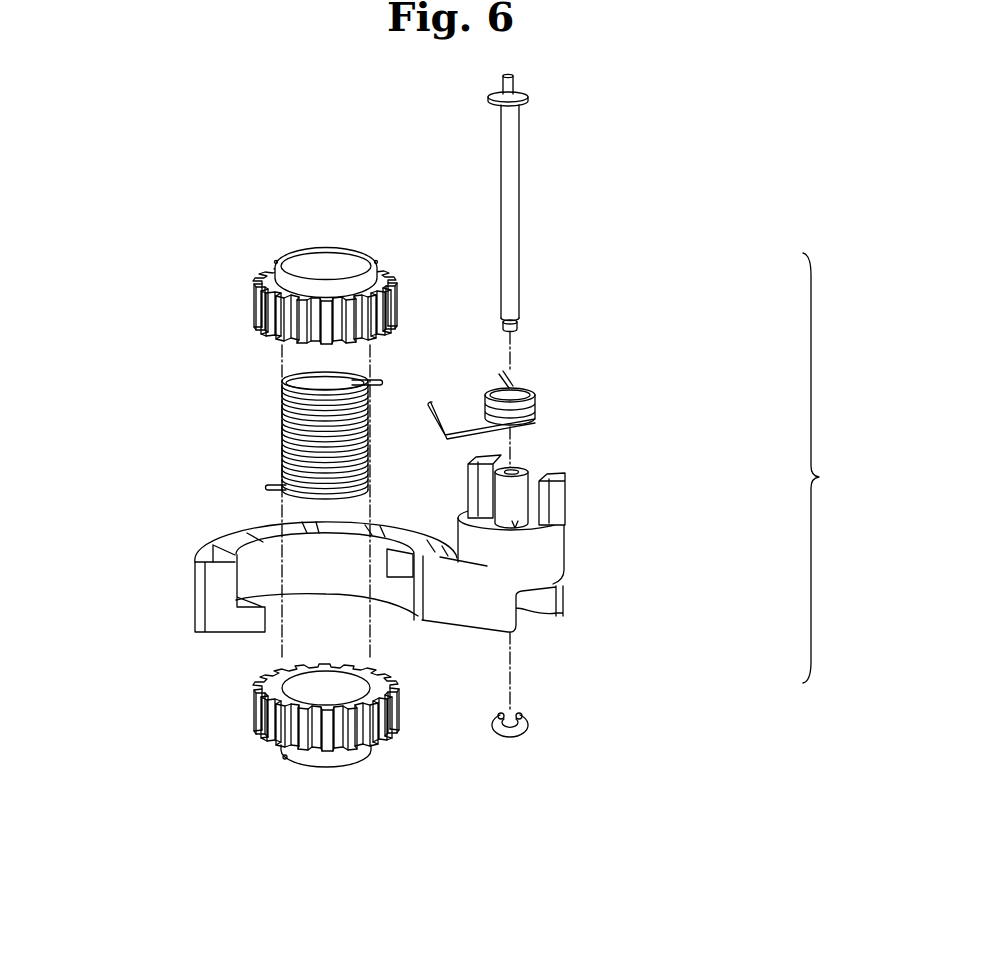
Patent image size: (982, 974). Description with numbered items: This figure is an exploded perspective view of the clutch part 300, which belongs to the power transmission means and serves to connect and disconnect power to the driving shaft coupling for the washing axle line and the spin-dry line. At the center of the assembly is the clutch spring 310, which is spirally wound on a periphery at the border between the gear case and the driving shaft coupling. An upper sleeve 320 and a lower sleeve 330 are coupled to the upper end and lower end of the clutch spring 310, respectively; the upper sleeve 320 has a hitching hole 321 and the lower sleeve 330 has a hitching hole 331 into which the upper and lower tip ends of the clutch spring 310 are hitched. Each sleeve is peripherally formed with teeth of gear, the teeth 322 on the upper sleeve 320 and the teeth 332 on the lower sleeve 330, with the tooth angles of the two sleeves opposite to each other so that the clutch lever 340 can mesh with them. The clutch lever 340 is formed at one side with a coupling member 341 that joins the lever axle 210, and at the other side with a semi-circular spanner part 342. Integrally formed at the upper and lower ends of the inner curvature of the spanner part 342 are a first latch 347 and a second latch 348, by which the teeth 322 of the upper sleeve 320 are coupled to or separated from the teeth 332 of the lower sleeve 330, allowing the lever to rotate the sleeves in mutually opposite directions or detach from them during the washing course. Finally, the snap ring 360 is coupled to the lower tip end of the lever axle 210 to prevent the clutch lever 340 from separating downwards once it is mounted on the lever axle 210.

The lever axle 210 is at (517, 150).
The clutch part 300 is at (834, 468).
The clutch spring 310 is at (353, 366).
The upper sleeve 320 is at (459, 288).
The hitching hole 321 is at (372, 285).
The teeth of gear 322 is at (263, 309).
The lower sleeve 330 is at (465, 742).
The hitching hole 331 is at (304, 786).
The teeth of gear 332 is at (252, 718).
The clutch lever 340 is at (432, 592).
The coupling member 341 is at (548, 552).
The spanner part 342 is at (282, 626).
The first latch 347 is at (402, 568).
The second latch 348 is at (253, 622).
The snap ring 360 is at (530, 718).